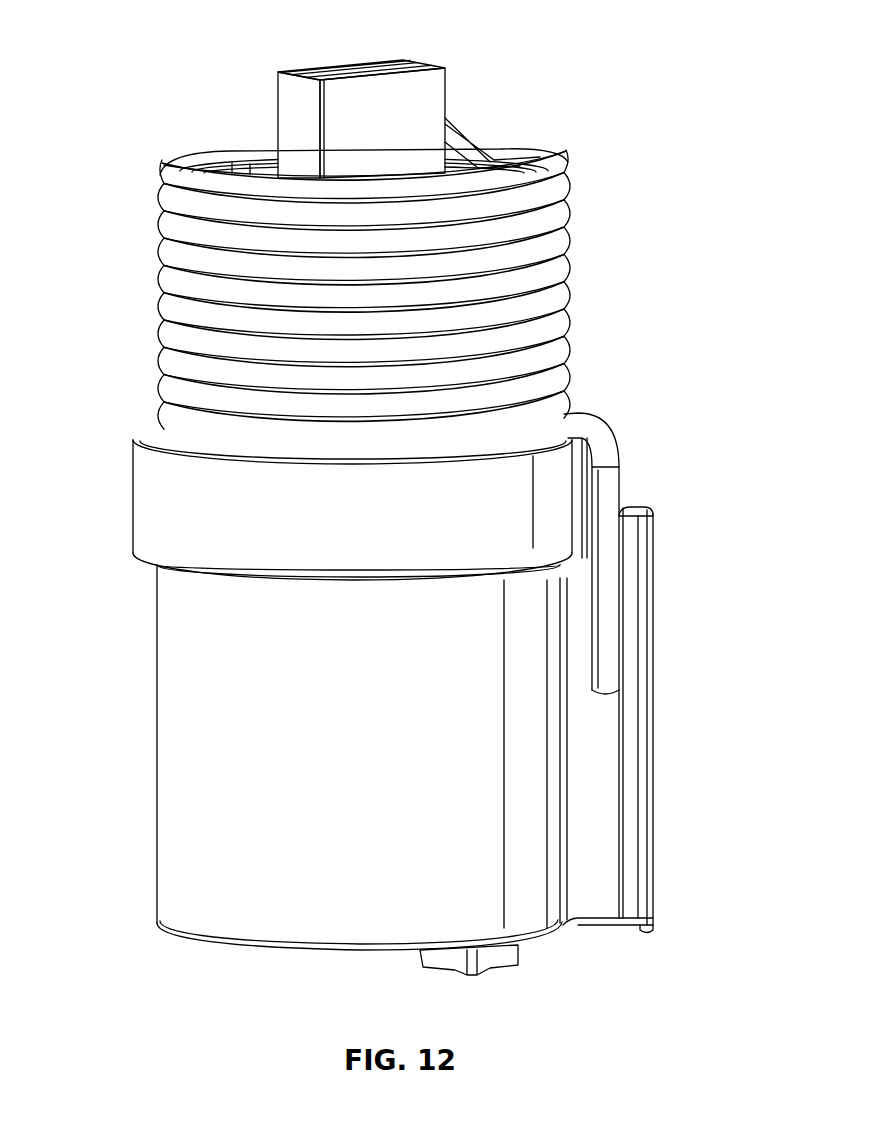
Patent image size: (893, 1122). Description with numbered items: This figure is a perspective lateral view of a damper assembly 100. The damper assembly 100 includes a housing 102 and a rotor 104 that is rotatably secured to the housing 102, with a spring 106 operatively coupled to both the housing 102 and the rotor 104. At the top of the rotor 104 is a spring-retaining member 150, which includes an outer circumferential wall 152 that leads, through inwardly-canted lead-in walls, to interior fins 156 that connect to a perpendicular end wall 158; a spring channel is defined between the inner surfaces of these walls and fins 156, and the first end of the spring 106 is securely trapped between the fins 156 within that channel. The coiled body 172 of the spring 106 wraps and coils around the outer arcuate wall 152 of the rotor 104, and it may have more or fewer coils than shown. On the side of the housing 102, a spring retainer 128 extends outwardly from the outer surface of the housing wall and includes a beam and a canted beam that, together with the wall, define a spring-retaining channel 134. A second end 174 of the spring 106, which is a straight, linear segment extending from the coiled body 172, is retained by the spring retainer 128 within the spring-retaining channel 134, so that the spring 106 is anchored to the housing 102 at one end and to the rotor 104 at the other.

The damper assembly 100 is at (148, 78).
The housing 102 is at (150, 672).
The rotor 104 is at (456, 85).
The spring 106 is at (592, 258).
The spring retainer 128 is at (653, 748).
The spring-retaining channel 134 is at (587, 887).
The spring-retaining member 150 is at (198, 152).
The outer circumferential wall 152 is at (242, 155).
The interior fins 156 is at (350, 64).
The end wall 158 is at (295, 92).
The coiled body 172 is at (567, 217).
The second end 174 is at (608, 488).